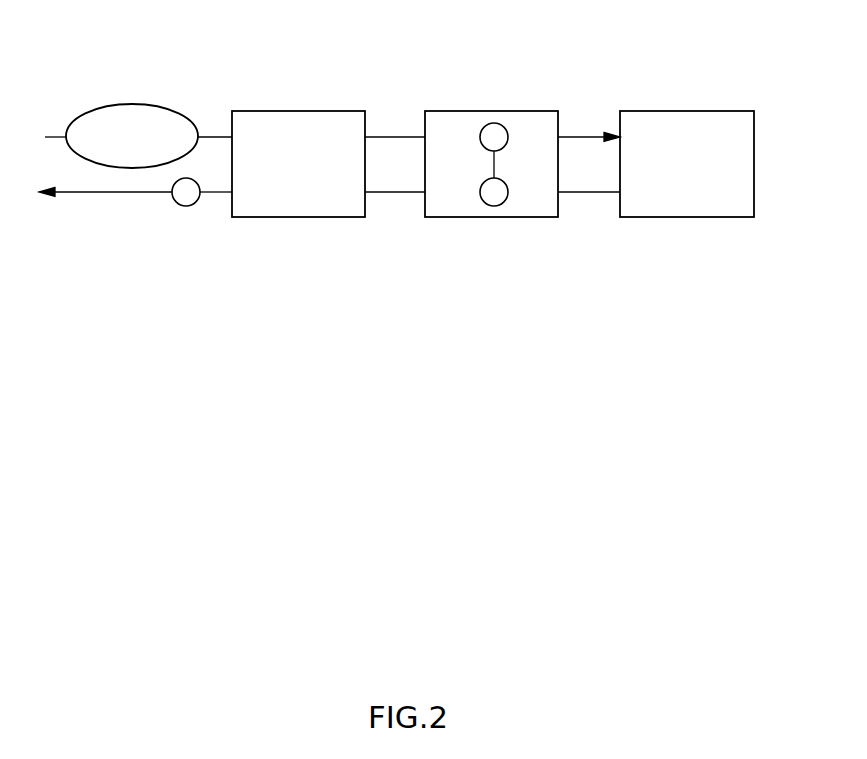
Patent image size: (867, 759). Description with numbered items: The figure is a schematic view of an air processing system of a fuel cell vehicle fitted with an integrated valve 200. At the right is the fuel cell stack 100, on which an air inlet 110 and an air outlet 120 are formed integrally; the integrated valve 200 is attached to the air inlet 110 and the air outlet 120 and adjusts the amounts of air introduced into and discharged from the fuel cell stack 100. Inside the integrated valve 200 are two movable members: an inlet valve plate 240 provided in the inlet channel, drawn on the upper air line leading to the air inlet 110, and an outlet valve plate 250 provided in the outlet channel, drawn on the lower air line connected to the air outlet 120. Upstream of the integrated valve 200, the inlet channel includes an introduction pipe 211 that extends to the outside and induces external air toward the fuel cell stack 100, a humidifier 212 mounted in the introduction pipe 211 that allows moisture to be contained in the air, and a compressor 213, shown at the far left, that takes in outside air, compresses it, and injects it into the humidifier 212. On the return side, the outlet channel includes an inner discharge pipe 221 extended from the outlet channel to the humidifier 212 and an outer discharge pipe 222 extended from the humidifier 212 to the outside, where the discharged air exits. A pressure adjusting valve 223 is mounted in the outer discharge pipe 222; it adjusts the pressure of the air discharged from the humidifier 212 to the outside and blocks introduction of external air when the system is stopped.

The fuel cell stack 100 is at (717, 111).
The air inlet 110 is at (592, 137).
The air outlet 120 is at (592, 192).
The integrated valve 200 is at (537, 111).
The introduction pipe 211 is at (394, 137).
The humidifier 212 is at (297, 111).
The compressor 213 is at (130, 103).
The inner discharge pipe 221 is at (393, 192).
The outer discharge pipe 222 is at (115, 192).
The pressure adjusting valve 223 is at (185, 206).
The inlet valve plate 240 is at (494, 123).
The outlet valve plate 250 is at (493, 207).